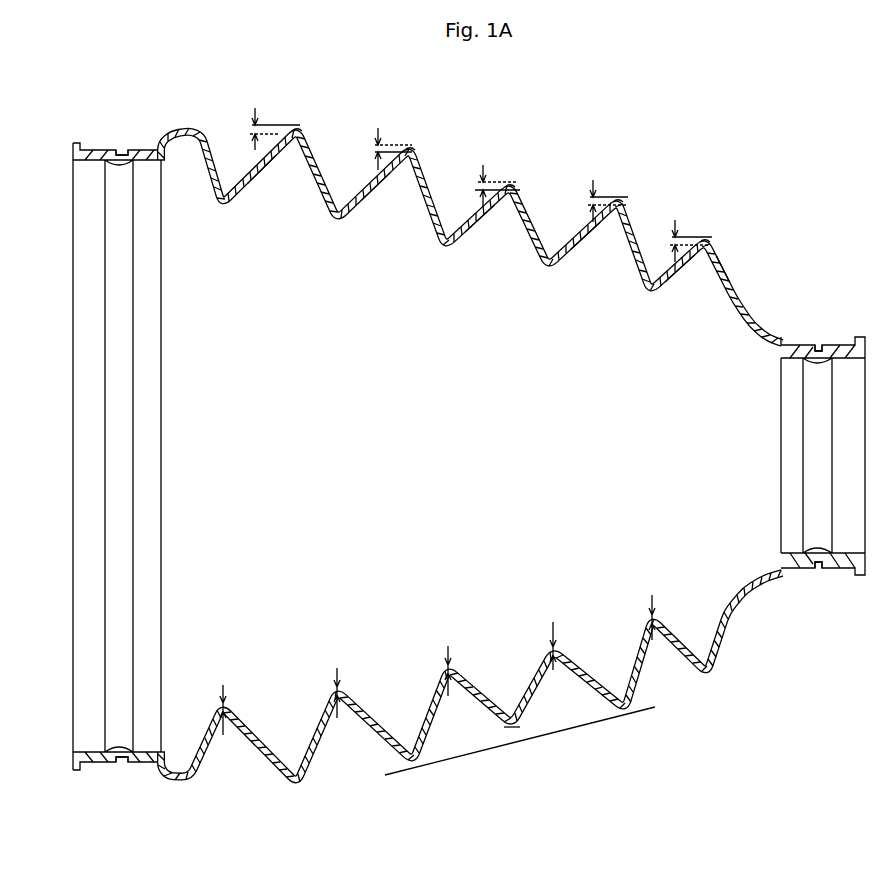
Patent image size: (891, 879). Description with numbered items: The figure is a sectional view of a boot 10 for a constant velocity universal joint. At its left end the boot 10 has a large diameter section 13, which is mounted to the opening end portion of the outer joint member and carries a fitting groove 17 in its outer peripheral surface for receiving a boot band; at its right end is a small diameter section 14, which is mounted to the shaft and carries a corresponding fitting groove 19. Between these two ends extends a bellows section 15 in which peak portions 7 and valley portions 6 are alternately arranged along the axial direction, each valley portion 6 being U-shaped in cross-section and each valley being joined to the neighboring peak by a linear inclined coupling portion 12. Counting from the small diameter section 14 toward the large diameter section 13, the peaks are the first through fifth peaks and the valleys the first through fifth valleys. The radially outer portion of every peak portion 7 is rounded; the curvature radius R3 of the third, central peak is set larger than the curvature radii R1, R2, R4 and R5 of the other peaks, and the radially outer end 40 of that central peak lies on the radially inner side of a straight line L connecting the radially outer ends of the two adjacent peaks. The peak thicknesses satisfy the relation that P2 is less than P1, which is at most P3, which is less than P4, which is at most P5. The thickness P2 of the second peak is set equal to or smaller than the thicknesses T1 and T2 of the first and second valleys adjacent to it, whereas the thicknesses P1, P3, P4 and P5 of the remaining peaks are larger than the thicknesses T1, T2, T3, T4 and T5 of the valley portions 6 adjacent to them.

The boot 10 is at (591, 103).
The coupling portion 12 is at (265, 170).
The large diameter section 13 is at (105, 138).
The small diameter section 14 is at (808, 337).
The bellows section 15 is at (741, 281).
The fitting groove 17 is at (140, 150).
The fitting groove 19 is at (840, 345).
The radially outer end 40 is at (522, 730).
The valley portions 6 is at (220, 703).
The peak portions 7 is at (297, 126).
The thickness of the first peak P1 is at (672, 237).
The thickness of the second peak P2 is at (590, 197).
The thickness of the third peak P3 is at (478, 182).
The thickness of the fourth peak P4 is at (375, 150).
The thickness of the fifth peak P5 is at (252, 128).
The curvature radius of the first peak R1 is at (716, 248).
The curvature radius of the second peak R2 is at (628, 200).
The curvature radius of the third peak R3 is at (520, 188).
The curvature radius of the fourth peak R4 is at (418, 152).
The curvature radius of the fifth peak R5 is at (305, 133).
The thickness of the first valley T1 is at (660, 616).
The thickness of the second valley T2 is at (560, 643).
The thickness of the third valley T3 is at (458, 668).
The thickness of the fourth valley T4 is at (347, 688).
The thickness of the fifth valley T5 is at (232, 705).
The straight line L is at (648, 718).